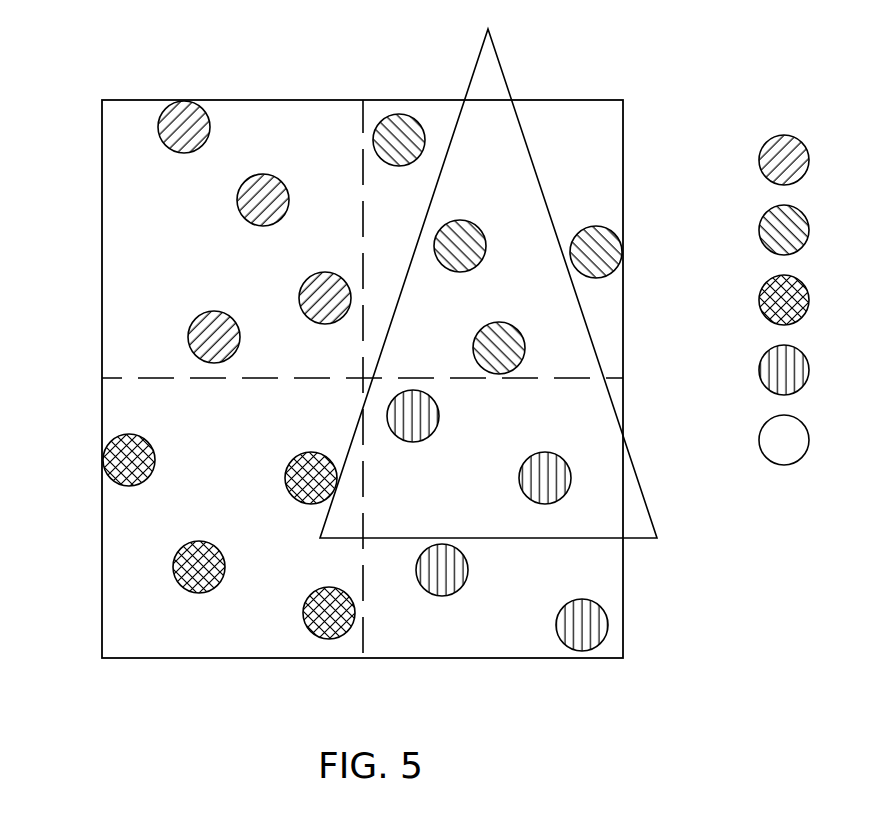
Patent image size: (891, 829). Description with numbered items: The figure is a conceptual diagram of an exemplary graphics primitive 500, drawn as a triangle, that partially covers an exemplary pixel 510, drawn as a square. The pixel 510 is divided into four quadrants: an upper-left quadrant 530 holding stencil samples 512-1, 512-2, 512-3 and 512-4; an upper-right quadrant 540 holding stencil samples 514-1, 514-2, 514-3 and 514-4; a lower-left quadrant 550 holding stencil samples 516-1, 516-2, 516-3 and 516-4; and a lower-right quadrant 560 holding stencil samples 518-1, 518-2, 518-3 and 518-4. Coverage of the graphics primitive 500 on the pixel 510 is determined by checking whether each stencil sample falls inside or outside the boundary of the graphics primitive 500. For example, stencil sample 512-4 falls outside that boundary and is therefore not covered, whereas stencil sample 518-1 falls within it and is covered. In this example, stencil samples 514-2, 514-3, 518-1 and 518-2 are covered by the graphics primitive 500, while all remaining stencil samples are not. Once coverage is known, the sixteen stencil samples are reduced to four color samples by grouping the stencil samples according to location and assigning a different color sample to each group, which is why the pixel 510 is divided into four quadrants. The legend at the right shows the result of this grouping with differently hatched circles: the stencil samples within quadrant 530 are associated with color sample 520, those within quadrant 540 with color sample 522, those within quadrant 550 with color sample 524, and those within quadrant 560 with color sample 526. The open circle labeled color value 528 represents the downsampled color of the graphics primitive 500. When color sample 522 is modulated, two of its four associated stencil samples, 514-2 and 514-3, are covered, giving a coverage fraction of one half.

The graphics primitive 500 is at (503, 67).
The pixel 510 is at (102, 100).
The upper-left quadrant 530 is at (132, 156).
The upper-right quadrant 540 is at (596, 157).
The lower-left quadrant 550 is at (148, 624).
The lower-right quadrant 560 is at (578, 583).
The stencil sample 512-1 is at (171, 150).
The stencil sample 512-2 is at (282, 182).
The stencil sample 512-3 is at (323, 272).
The stencil sample 512-4 is at (205, 312).
The stencil sample 514-1 is at (398, 166).
The stencil sample 514-2 is at (461, 220).
The stencil sample 514-3 is at (495, 322).
The stencil sample 514-4 is at (587, 227).
The stencil sample 516-1 is at (149, 443).
The stencil sample 516-2 is at (306, 453).
The stencil sample 516-3 is at (201, 541).
The stencil sample 516-4 is at (324, 588).
The stencil sample 518-1 is at (421, 441).
The stencil sample 518-2 is at (539, 453).
The stencil sample 518-3 is at (468, 571).
The stencil sample 518-4 is at (556, 626).
The color sample 520 is at (812, 160).
The color sample 522 is at (812, 230).
The color sample 524 is at (812, 300).
The color sample 526 is at (812, 370).
The color value 528 is at (812, 440).